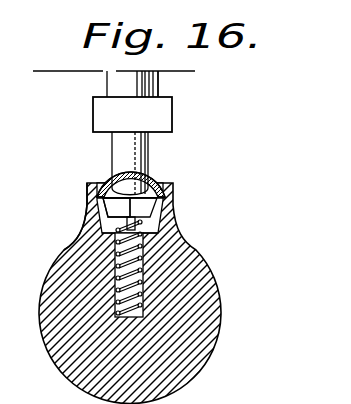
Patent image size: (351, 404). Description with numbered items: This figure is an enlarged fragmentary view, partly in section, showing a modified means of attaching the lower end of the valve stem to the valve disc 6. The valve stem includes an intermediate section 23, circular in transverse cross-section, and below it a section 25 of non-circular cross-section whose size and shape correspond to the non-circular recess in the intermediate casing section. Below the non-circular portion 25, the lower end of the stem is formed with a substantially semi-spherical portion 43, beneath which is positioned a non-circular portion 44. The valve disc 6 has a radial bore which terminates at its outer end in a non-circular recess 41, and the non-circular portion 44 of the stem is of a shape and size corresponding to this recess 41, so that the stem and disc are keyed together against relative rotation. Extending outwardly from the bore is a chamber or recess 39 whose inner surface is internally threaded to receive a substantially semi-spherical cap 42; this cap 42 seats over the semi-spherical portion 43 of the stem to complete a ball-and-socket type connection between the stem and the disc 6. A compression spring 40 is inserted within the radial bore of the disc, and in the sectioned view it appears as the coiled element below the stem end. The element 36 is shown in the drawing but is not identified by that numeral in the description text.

The valve disc 6 is at (193, 303).
The bulb neck body 36 is at (158, 266).
The non-circular recess 41 is at (160, 238).
The compression spring 40 is at (115, 275).
The semi-spherical cap 42 is at (160, 177).
The semi-spherical portion 43 is at (118, 188).
The chamber or recess 39 is at (157, 218).
The non-circular portion 44 is at (117, 212).
The intermediate section of valve stem 23 is at (158, 85).
The non-circular section of valve stem 25 is at (172, 128).